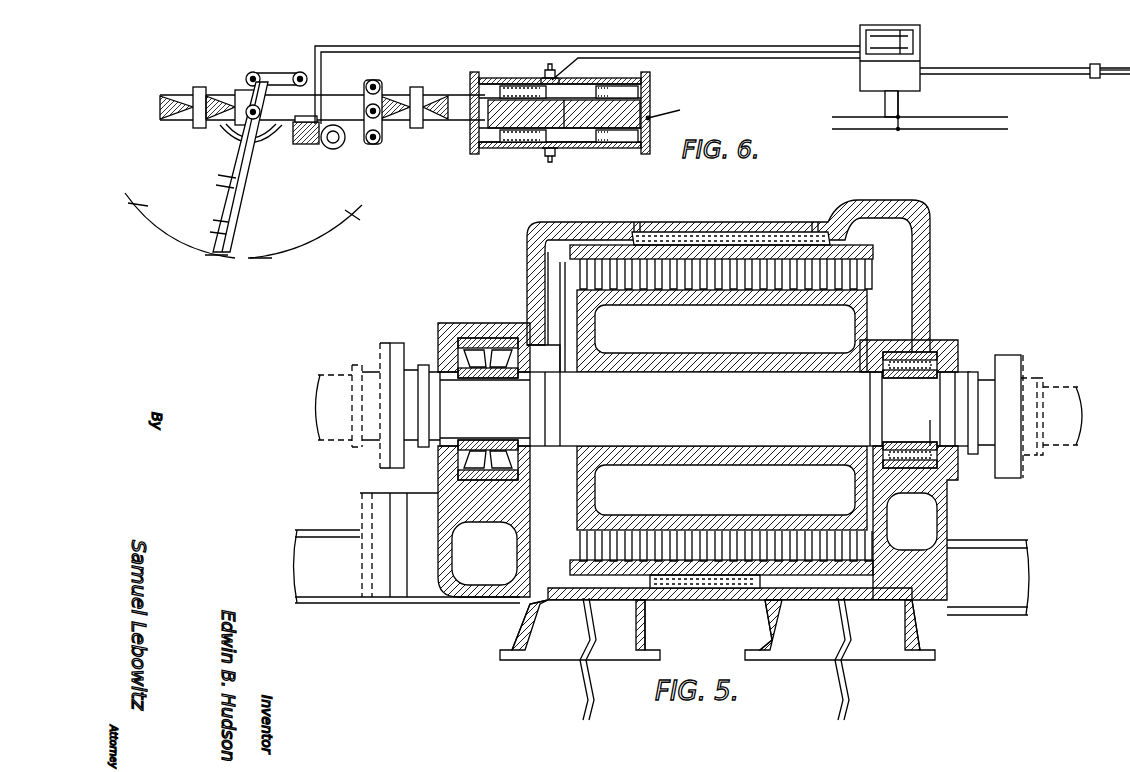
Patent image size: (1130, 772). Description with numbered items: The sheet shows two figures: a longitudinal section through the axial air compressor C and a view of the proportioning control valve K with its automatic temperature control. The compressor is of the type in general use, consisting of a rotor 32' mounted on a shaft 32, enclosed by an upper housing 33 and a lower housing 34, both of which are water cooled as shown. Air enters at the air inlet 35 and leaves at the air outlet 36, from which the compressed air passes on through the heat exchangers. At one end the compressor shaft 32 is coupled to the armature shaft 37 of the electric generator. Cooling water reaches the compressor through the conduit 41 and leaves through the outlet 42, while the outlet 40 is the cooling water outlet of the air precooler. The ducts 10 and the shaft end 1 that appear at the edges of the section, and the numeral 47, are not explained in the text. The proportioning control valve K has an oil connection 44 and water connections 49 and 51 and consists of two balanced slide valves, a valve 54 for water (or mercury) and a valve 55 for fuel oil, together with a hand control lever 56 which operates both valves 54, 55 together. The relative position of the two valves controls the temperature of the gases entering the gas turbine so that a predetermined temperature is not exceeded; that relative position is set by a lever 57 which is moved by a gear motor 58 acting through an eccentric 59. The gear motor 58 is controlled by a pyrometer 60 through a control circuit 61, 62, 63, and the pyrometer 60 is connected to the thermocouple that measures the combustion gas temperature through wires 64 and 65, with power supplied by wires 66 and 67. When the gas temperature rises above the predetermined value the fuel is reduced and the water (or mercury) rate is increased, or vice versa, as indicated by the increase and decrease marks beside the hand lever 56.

In FIG. 5, the drive shaft end 1 is at (343, 418).
In FIG. 5, the air duct 10 is at (328, 585).
In FIG. 5, the shaft 32 is at (703, 363).
In FIG. 5, the rotor 32' is at (721, 410).
In FIG. 5, the upper housing 33 is at (560, 222).
In FIG. 5, the lower housing 34 is at (440, 472).
In FIG. 5, the air inlet 35 is at (882, 660).
In FIG. 5, the air outlet 36 is at (565, 658).
In FIG. 5, the armature shaft 37 is at (1060, 397).
In FIG. 5, the conduit 41 is at (816, 222).
In FIG. 5, the outlet 42 is at (636, 222).
In FIG. 5, the winding 47 is at (748, 224).
In FIG. 6, the outlet 40 is at (549, 158).
In FIG. 6, the oil connection 44 is at (580, 133).
In FIG. 6, the water connection 49 is at (592, 100).
In FIG. 6, the water connection 51 is at (552, 76).
In FIG. 6, the valve 54 is at (540, 94).
In FIG. 6, the valve 55 is at (515, 143).
In FIG. 6, the hand control lever 56 is at (224, 194).
In FIG. 6, the lever 57 is at (366, 88).
In FIG. 6, the gear motor 58 is at (303, 140).
In FIG. 6, the eccentric 59 is at (340, 142).
In FIG. 6, the pyrometer 60 is at (866, 75).
In FIG. 6, the control circuit 61 is at (665, 48).
In FIG. 6, the control circuit 62 is at (706, 56).
In FIG. 6, the control circuit 63 is at (738, 61).
In FIG. 6, the wire 64 is at (990, 70).
In FIG. 6, the wire 65 is at (1011, 76).
In FIG. 6, the wire 66 is at (885, 107).
In FIG. 6, the wire 67 is at (900, 105).